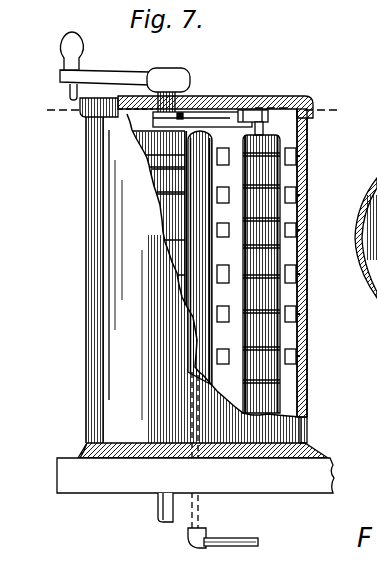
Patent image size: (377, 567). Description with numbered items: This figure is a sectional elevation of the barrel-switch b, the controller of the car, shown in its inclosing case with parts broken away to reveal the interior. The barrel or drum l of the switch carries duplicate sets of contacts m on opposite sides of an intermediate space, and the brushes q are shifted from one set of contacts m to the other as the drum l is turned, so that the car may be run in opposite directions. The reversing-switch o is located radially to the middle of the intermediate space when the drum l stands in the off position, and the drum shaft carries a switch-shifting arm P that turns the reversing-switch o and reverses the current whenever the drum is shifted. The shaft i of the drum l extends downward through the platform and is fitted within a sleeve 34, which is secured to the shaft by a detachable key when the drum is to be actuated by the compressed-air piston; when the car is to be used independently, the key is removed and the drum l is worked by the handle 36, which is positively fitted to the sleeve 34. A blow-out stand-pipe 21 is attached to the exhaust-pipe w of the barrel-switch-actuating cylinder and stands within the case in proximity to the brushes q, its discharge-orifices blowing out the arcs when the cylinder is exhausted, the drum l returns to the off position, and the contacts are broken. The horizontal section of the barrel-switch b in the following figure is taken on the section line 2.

The handle 36 is at (111, 72).
The section line 2 is at (193, 109).
The sleeve 34 is at (221, 113).
The switch-shifting arm P is at (215, 89).
The reversing-switch o is at (289, 142).
The contacts m is at (165, 197).
The barrel or drum l is at (153, 212).
The brushes q is at (218, 164).
The blow-out stand-pipe 21 is at (192, 306).
The barrel-switch b is at (86, 313).
The shaft i is at (160, 506).
The exhaust-pipe w is at (223, 532).